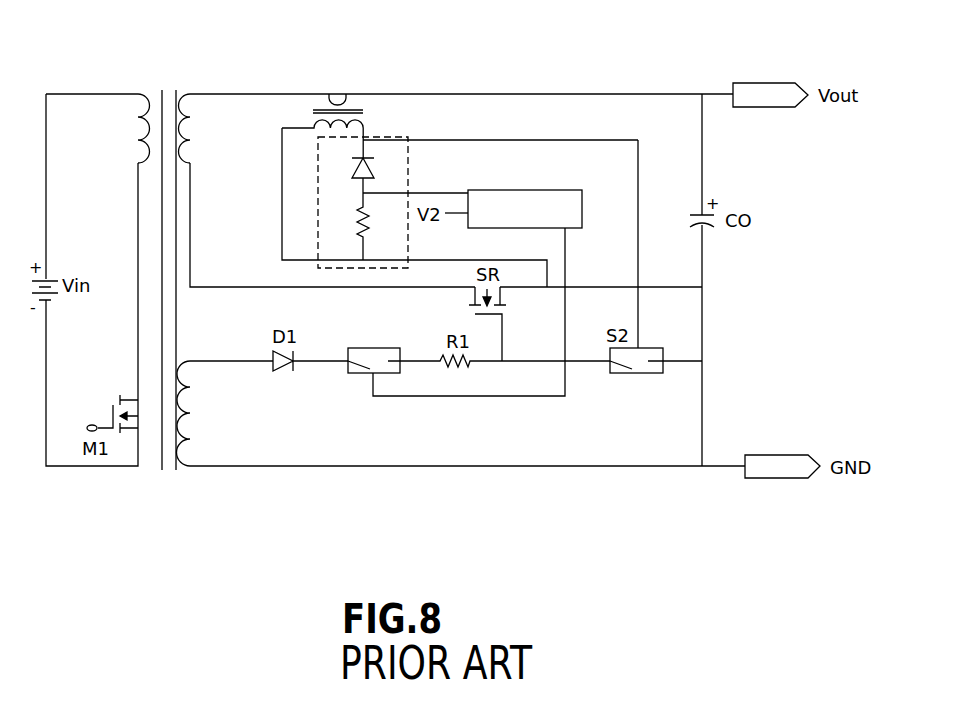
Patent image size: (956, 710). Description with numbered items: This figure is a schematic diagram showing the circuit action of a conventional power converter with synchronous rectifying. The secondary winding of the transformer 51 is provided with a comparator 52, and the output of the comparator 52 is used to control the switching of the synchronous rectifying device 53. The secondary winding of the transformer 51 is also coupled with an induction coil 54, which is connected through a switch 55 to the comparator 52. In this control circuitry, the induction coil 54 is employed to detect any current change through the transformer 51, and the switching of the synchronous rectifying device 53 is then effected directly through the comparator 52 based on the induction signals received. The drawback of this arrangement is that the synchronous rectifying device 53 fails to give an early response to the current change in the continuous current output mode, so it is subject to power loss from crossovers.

The transformer 51 is at (172, 88).
The comparator 52 is at (540, 190).
The synchronous rectifying device 53 is at (385, 136).
The induction coil 54 is at (205, 397).
The switch 55 is at (395, 343).